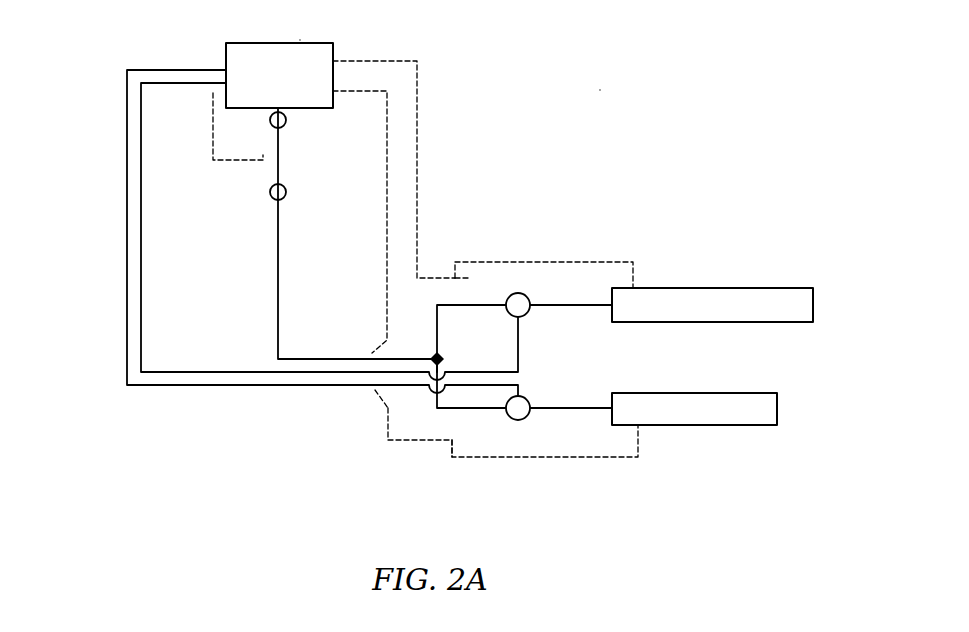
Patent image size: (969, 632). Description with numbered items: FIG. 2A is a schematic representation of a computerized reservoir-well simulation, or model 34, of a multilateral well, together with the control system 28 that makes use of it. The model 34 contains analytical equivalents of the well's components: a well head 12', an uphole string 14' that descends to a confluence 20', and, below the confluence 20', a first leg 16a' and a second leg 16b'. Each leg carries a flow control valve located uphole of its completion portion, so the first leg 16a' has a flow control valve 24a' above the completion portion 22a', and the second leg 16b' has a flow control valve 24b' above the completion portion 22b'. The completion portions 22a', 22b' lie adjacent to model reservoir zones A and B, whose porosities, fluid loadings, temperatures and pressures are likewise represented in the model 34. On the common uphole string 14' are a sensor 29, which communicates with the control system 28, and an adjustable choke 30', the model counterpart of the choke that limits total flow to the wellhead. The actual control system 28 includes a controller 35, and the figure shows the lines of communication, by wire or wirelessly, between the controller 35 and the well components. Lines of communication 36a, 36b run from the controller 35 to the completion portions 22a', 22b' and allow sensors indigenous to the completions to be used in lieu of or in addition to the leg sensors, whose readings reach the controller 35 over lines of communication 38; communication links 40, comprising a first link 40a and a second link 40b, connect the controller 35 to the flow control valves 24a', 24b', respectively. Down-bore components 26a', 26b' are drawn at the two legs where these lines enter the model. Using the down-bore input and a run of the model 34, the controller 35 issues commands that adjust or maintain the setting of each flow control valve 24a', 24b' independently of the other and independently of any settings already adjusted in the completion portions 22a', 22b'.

The control system 28 is at (345, 32).
The controller 35 is at (282, 43).
The well head 12' is at (310, 131).
The adjustable choke 30' is at (310, 183).
The sensor 29 is at (263, 162).
The uphole string 14' is at (355, 233).
The lines of communication 38 is at (388, 107).
The communication links 40 is at (110, 282).
The first communication link 40a is at (142, 273).
The second communication link 40b is at (127, 308).
The first leg 16a' is at (502, 330).
The second leg 16b' is at (476, 400).
The confluence 20' is at (464, 350).
The flow control valve 24a' is at (550, 319).
The flow control valve 24b' is at (551, 399).
The completion portion 22a' is at (712, 306).
The completion portion 22b' is at (694, 412).
The line of communication 36a is at (587, 262).
The line of communication 36b is at (603, 457).
The first sensor 26a' is at (499, 281).
The second sensor 26b' is at (434, 451).
The computerized model 34 is at (587, 100).